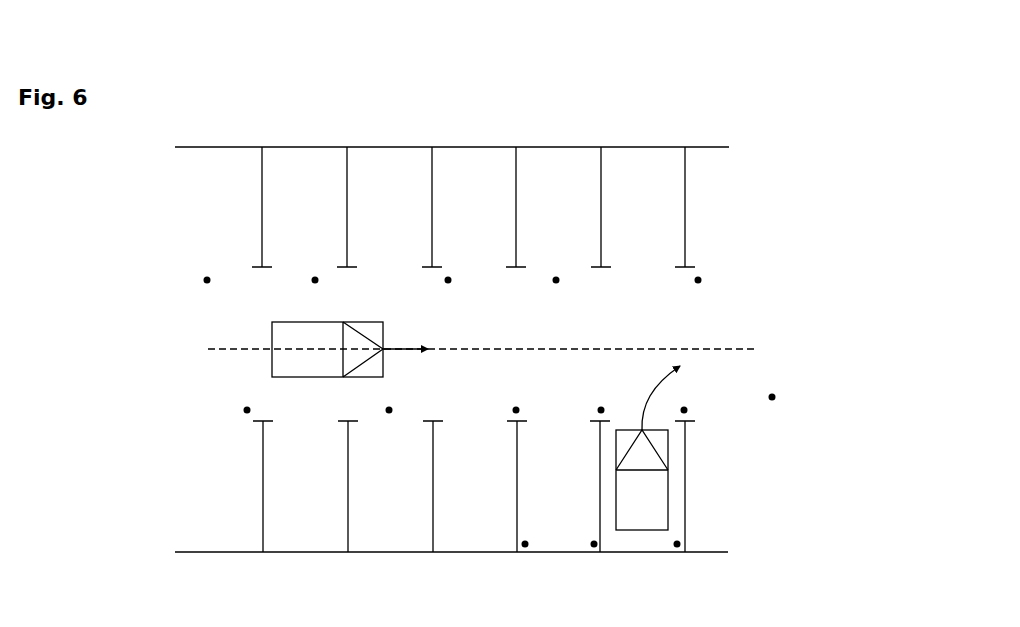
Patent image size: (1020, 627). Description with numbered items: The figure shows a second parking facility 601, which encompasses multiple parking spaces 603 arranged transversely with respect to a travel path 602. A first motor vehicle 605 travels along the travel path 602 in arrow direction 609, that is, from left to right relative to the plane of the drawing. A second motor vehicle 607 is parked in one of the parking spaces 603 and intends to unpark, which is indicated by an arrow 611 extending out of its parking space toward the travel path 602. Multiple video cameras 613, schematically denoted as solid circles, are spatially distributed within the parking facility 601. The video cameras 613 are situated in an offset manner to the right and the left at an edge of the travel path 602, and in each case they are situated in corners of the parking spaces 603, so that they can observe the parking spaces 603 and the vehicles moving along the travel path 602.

The parking facility 601 is at (499, 336).
The travel path 602 is at (717, 330).
The parking spaces 603 is at (658, 583).
The first motor vehicle 605 is at (272, 328).
The second motor vehicle 607 is at (668, 500).
The arrow direction 609 is at (411, 345).
The arrow 611 is at (662, 379).
The video cameras 613 is at (710, 583).